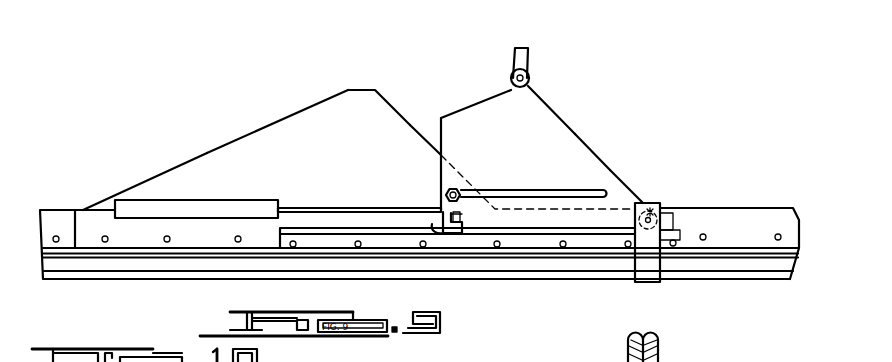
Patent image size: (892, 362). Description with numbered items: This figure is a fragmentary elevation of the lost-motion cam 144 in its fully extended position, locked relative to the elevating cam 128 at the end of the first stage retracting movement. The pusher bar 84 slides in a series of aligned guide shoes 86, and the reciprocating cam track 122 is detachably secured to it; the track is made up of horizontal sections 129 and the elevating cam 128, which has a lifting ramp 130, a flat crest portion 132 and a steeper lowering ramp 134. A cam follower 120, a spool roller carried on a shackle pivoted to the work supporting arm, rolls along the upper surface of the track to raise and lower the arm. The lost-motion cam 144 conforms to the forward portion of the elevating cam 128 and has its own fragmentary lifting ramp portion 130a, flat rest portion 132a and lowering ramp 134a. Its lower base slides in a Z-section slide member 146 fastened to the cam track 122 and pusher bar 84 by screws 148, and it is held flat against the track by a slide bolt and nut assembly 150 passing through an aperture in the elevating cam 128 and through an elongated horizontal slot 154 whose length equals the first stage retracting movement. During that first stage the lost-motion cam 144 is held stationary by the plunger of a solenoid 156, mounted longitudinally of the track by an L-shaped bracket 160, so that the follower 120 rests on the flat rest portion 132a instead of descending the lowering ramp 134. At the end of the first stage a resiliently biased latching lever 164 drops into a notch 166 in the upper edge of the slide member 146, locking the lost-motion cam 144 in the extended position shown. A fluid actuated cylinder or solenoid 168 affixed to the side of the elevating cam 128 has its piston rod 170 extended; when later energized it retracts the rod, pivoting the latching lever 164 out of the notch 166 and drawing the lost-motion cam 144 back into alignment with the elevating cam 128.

The pusher bar 84 is at (382, 252).
The guide shoes 86 is at (285, 265).
The cam follower 120 is at (530, 56).
The reciprocating cam track 122 is at (138, 231).
The elevating cam 128 is at (270, 140).
The horizontal sections 129 is at (49, 216).
The lifting ramp 130 is at (207, 153).
The fragmentary lifting ramp portion 130a is at (469, 108).
The flat crest portion 132 is at (362, 90).
The flat rest portion 132a is at (530, 86).
The lowering ramp 134 is at (392, 102).
The lowering ramp 134a is at (613, 167).
The lost-motion cam 144 is at (563, 143).
The slide member 146 is at (483, 243).
The screws 148 is at (565, 245).
The slide bolt and nut assembly 150 is at (447, 194).
The elongated horizontal slot 154 is at (508, 193).
The solenoid 156 is at (658, 200).
The L-shaped bracket 160 is at (653, 277).
The latching lever 164 is at (462, 225).
The notch 166 is at (437, 230).
The fluid actuated cylinder or solenoid 168 is at (220, 207).
The piston rod 170 is at (356, 208).